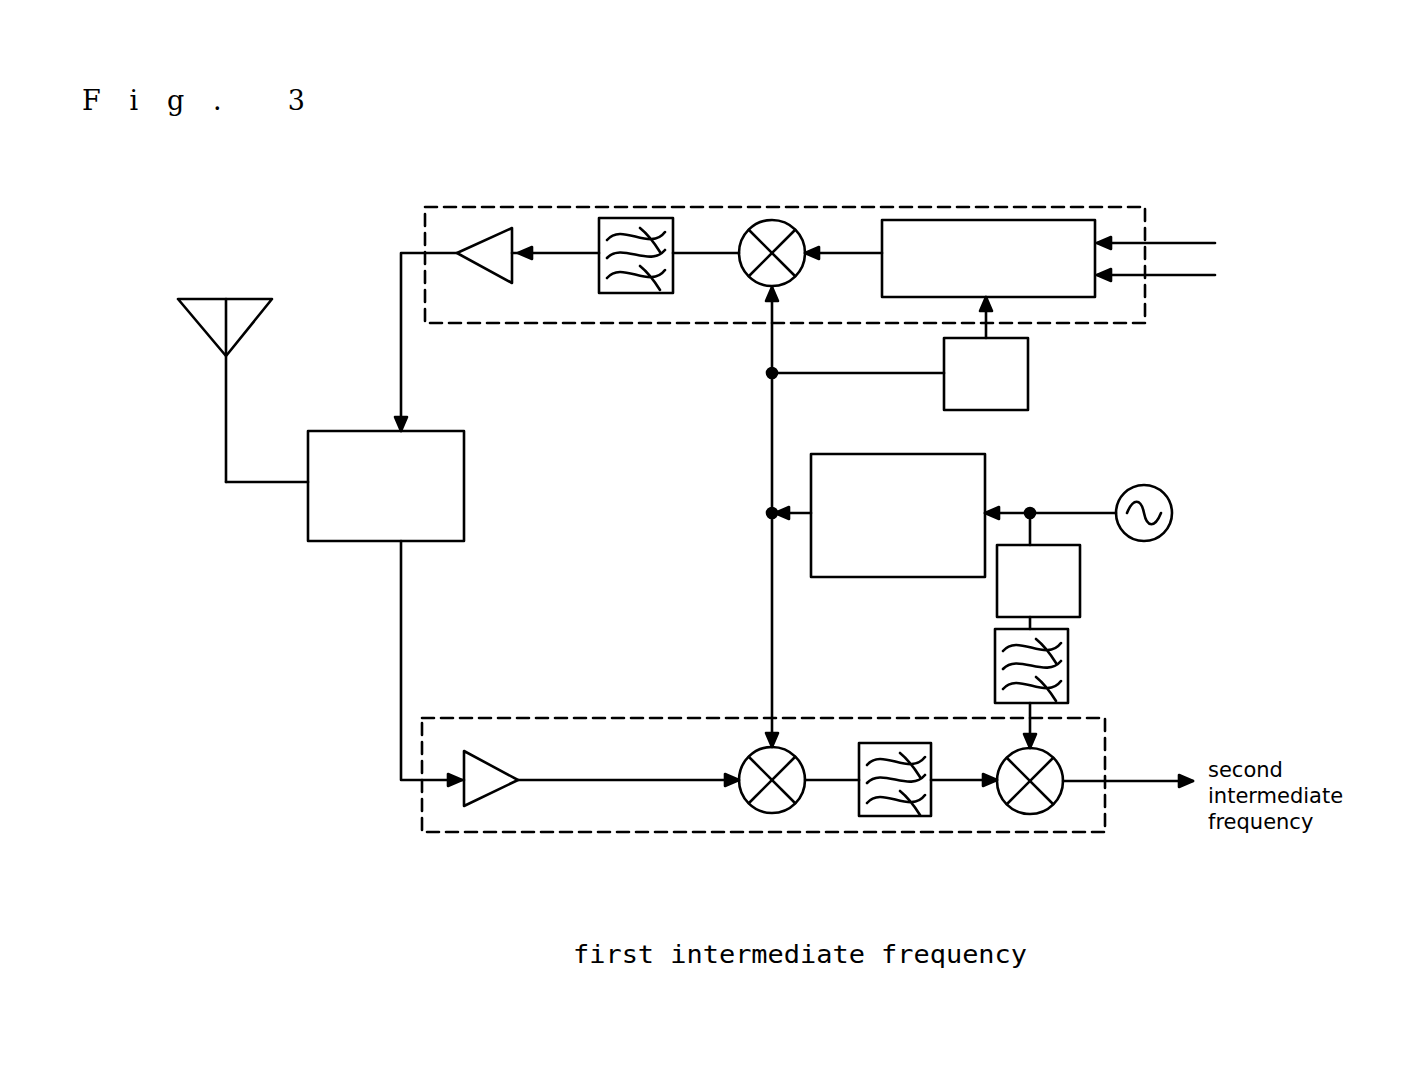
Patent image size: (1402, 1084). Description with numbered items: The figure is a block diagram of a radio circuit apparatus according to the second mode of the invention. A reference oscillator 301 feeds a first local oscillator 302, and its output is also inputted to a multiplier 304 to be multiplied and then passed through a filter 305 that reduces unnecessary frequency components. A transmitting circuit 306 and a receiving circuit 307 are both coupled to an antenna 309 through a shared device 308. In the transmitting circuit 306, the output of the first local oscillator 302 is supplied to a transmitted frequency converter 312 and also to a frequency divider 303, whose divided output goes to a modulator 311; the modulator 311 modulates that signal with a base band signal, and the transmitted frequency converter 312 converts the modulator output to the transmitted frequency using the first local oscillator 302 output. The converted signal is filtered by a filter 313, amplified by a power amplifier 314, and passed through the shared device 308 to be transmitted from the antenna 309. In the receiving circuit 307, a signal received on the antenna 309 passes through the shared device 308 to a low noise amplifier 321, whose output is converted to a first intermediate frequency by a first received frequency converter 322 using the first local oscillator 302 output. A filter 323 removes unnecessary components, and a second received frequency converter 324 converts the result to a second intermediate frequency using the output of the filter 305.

The reference oscillator 301 is at (1124, 493).
The first local oscillator 302 is at (923, 577).
The frequency divider 303 is at (1028, 387).
The multiplier 304 is at (1080, 580).
The filter 305 is at (1068, 662).
The transmitting circuit 306 is at (1145, 207).
The receiving circuit 307 is at (1105, 832).
The shared device 308 is at (464, 510).
The antenna 309 is at (208, 299).
The modulator 311 is at (968, 220).
The transmitted frequency converter 312 is at (760, 223).
The filter 313 is at (627, 218).
The power amplifier 314 is at (478, 237).
The low noise amplifier 321 is at (478, 806).
The first received frequency converter 322 is at (769, 813).
The filter 323 is at (887, 816).
The second received frequency converter 324 is at (1024, 813).